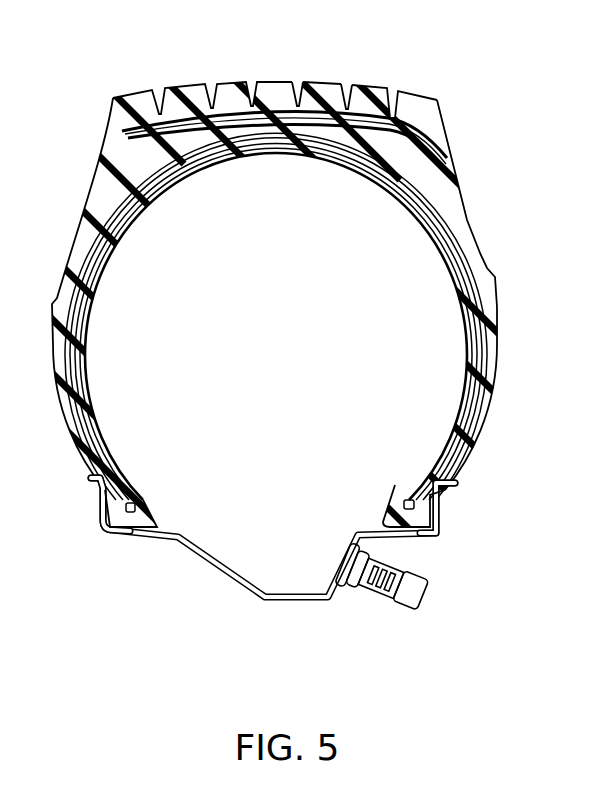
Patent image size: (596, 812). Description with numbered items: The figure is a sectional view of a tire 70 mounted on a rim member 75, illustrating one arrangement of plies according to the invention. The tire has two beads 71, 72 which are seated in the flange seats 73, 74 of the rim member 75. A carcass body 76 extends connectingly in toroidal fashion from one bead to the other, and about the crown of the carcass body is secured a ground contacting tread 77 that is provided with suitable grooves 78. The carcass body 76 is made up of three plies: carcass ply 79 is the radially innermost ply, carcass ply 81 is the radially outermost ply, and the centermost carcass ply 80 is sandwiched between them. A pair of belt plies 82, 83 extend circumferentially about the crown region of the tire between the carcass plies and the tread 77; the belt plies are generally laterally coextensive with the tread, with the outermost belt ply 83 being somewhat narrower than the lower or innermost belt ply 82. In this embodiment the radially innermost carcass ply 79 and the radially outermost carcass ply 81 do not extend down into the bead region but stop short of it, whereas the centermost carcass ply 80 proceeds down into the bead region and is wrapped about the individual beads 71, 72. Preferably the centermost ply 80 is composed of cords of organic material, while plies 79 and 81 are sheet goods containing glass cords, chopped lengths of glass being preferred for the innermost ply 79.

The tire 70 is at (475, 205).
The bead 71 is at (137, 535).
The bead 72 is at (427, 536).
The flange seat 73 is at (447, 506).
The flange seat 74 is at (108, 512).
The rim member 75 is at (311, 606).
The carcass body 76 is at (449, 281).
The ground contacting tread 77 is at (424, 97).
The grooves 78 is at (347, 88).
The carcass ply 79 is at (470, 314).
The carcass ply 80 is at (497, 329).
The carcass ply 81 is at (493, 395).
The belt ply 82 is at (234, 132).
The belt ply 83 is at (297, 104).